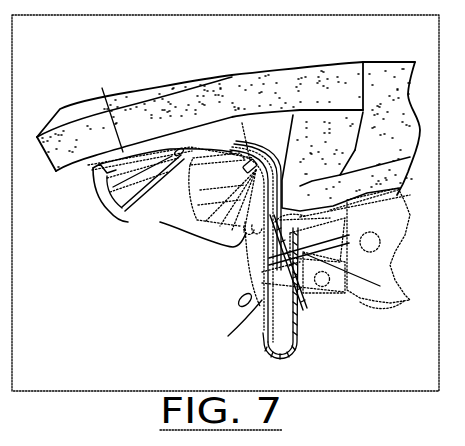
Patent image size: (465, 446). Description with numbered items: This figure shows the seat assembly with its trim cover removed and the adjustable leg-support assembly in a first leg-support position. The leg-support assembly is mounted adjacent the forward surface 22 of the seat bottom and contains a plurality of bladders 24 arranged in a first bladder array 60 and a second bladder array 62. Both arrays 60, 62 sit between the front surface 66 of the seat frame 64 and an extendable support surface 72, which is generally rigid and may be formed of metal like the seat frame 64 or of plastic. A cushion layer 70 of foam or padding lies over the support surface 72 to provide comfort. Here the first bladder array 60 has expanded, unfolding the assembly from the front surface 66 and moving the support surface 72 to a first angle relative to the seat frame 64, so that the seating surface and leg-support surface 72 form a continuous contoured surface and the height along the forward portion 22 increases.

The forward surface 22 is at (367, 64).
The bladder 24 is at (190, 224).
The first bladder array 60 is at (243, 256).
The second bladder array 62 is at (86, 167).
The seat frame 64 is at (353, 260).
The front surface 66 is at (265, 334).
The cushion layer 70 is at (218, 100).
The support surface 72 is at (107, 106).